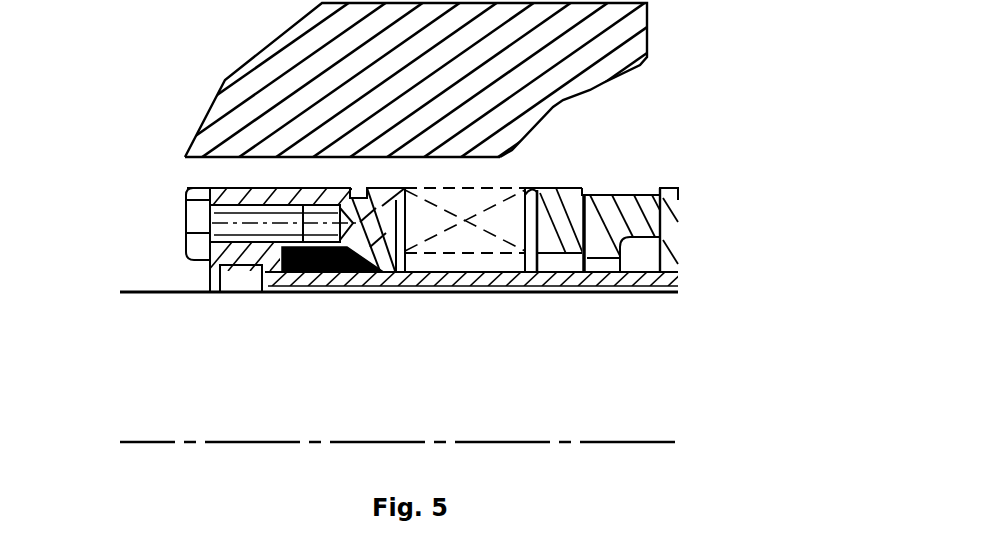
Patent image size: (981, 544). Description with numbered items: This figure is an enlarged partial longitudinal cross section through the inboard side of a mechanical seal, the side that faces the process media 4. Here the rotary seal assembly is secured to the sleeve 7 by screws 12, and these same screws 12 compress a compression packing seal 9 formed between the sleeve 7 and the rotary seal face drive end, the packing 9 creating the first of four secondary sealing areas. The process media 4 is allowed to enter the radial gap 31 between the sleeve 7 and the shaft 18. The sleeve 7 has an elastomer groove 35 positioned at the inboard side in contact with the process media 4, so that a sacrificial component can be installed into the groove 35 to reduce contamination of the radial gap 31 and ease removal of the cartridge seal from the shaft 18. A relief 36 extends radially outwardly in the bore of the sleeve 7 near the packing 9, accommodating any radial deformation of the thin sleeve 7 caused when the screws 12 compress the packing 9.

The process media 4 is at (155, 229).
The screws 12 is at (190, 200).
The elastomer groove 35 is at (242, 275).
The relief 36 is at (285, 288).
The compression packing seal 9 is at (325, 290).
The radial gap 31 is at (490, 293).
The sleeve 7 is at (597, 293).
The shaft 18 is at (663, 372).